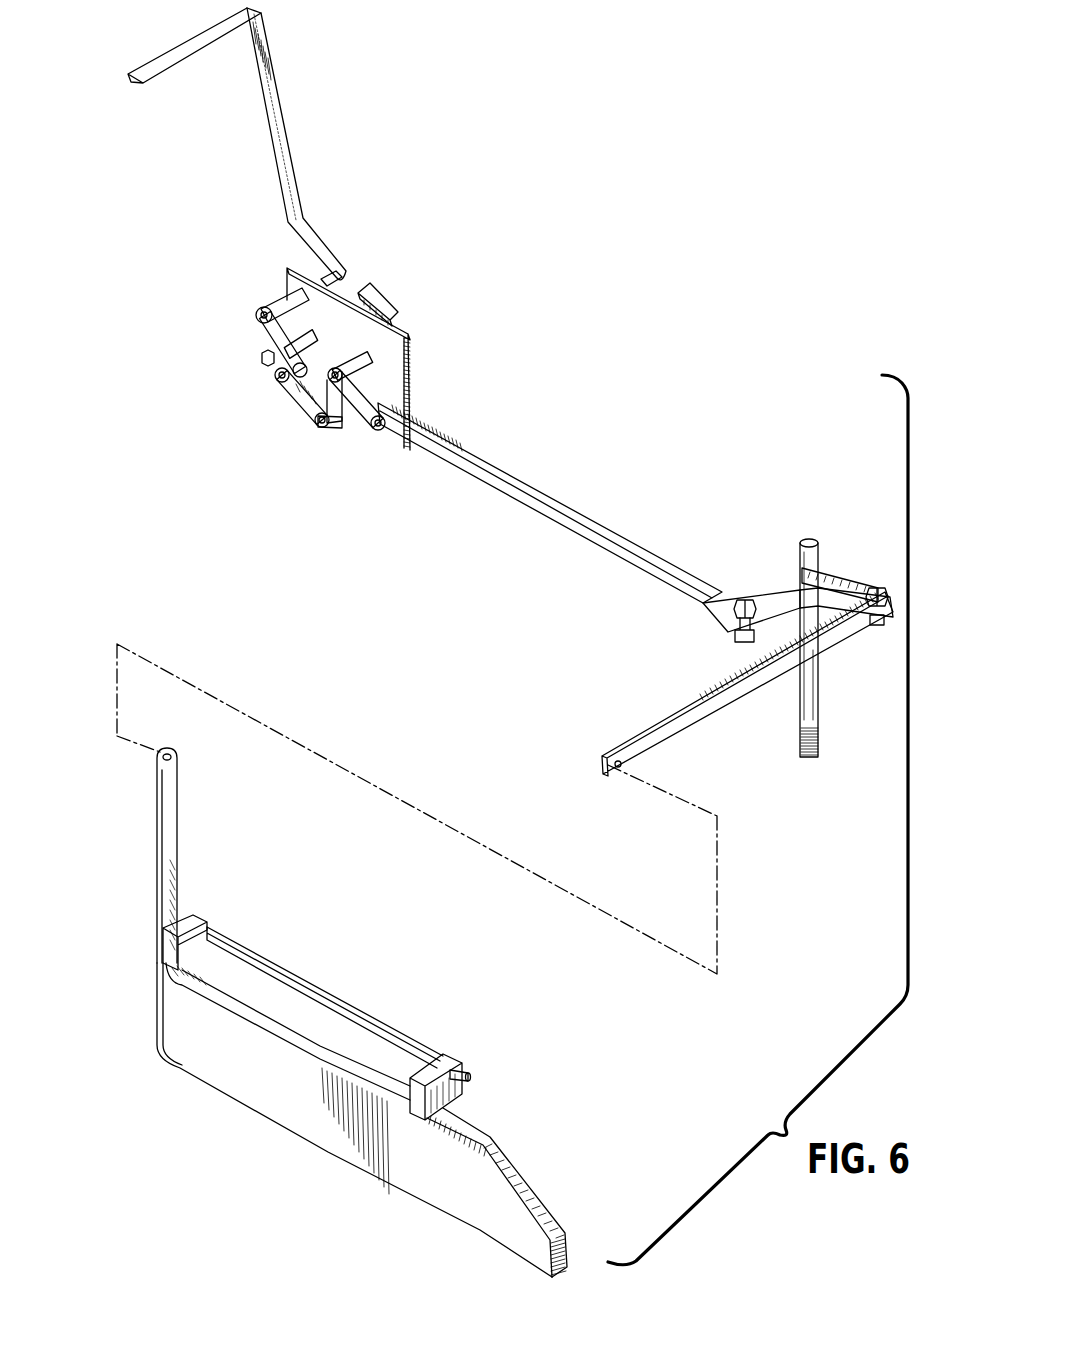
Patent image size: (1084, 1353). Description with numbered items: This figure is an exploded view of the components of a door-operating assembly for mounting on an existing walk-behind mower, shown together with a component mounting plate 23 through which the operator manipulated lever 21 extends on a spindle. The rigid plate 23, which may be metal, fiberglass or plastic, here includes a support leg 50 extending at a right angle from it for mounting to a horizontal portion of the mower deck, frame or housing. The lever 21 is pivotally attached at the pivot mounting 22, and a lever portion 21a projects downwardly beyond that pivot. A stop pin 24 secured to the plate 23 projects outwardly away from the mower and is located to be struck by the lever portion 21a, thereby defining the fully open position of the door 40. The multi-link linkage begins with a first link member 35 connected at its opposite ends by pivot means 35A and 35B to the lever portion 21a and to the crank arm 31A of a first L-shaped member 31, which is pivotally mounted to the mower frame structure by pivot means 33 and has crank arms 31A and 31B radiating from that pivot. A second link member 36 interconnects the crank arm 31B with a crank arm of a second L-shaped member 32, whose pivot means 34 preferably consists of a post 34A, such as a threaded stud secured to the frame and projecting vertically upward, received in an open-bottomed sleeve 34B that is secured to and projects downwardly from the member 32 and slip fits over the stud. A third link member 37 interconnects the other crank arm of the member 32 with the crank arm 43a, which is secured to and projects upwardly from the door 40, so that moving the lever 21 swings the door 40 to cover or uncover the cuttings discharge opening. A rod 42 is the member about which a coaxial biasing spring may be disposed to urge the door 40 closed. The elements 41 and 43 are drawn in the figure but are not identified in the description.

The operator manipulated lever 21 is at (272, 105).
The lever portion 21a is at (268, 338).
The pivot mounting 22 is at (258, 318).
The mounting plate 23 is at (328, 302).
The stop pin 24 is at (268, 360).
The first L-shaped member 31 is at (390, 375).
The crank arm 31A is at (352, 430).
The crank arm 31B is at (350, 420).
The second L-shaped member 32 is at (857, 572).
The pivot means 33 is at (372, 388).
The pivot means 34 is at (795, 510).
The post 34A is at (820, 740).
The sleeve 34B is at (805, 697).
The first link member 35 is at (318, 393).
The pivot means 35A is at (276, 382).
The pivot means 35B is at (323, 425).
The second link member 36 is at (565, 512).
The third link member 37 is at (723, 690).
The door 40 is at (311, 1103).
The mounting block 41 is at (194, 920).
The rod 42 is at (445, 1058).
The bar 43 is at (325, 993).
The crank arm 43a is at (165, 856).
The support leg 50 is at (383, 290).